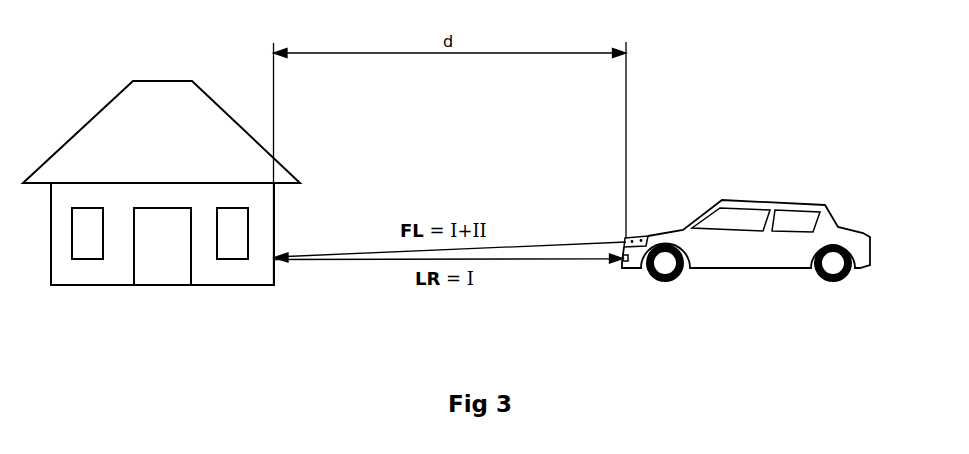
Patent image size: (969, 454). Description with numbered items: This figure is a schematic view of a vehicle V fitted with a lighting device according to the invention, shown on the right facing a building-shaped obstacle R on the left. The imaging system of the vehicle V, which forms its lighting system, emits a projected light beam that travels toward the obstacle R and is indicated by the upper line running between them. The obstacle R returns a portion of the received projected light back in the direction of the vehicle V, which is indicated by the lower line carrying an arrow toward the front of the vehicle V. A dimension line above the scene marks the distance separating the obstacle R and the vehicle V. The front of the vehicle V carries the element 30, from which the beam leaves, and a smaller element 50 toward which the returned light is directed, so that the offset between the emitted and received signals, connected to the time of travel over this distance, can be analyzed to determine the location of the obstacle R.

The sensor / transceiver unit 30 is at (625, 238).
The receiving unit 50 is at (622, 260).
The obstacle R is at (275, 230).
The vehicle V is at (828, 220).